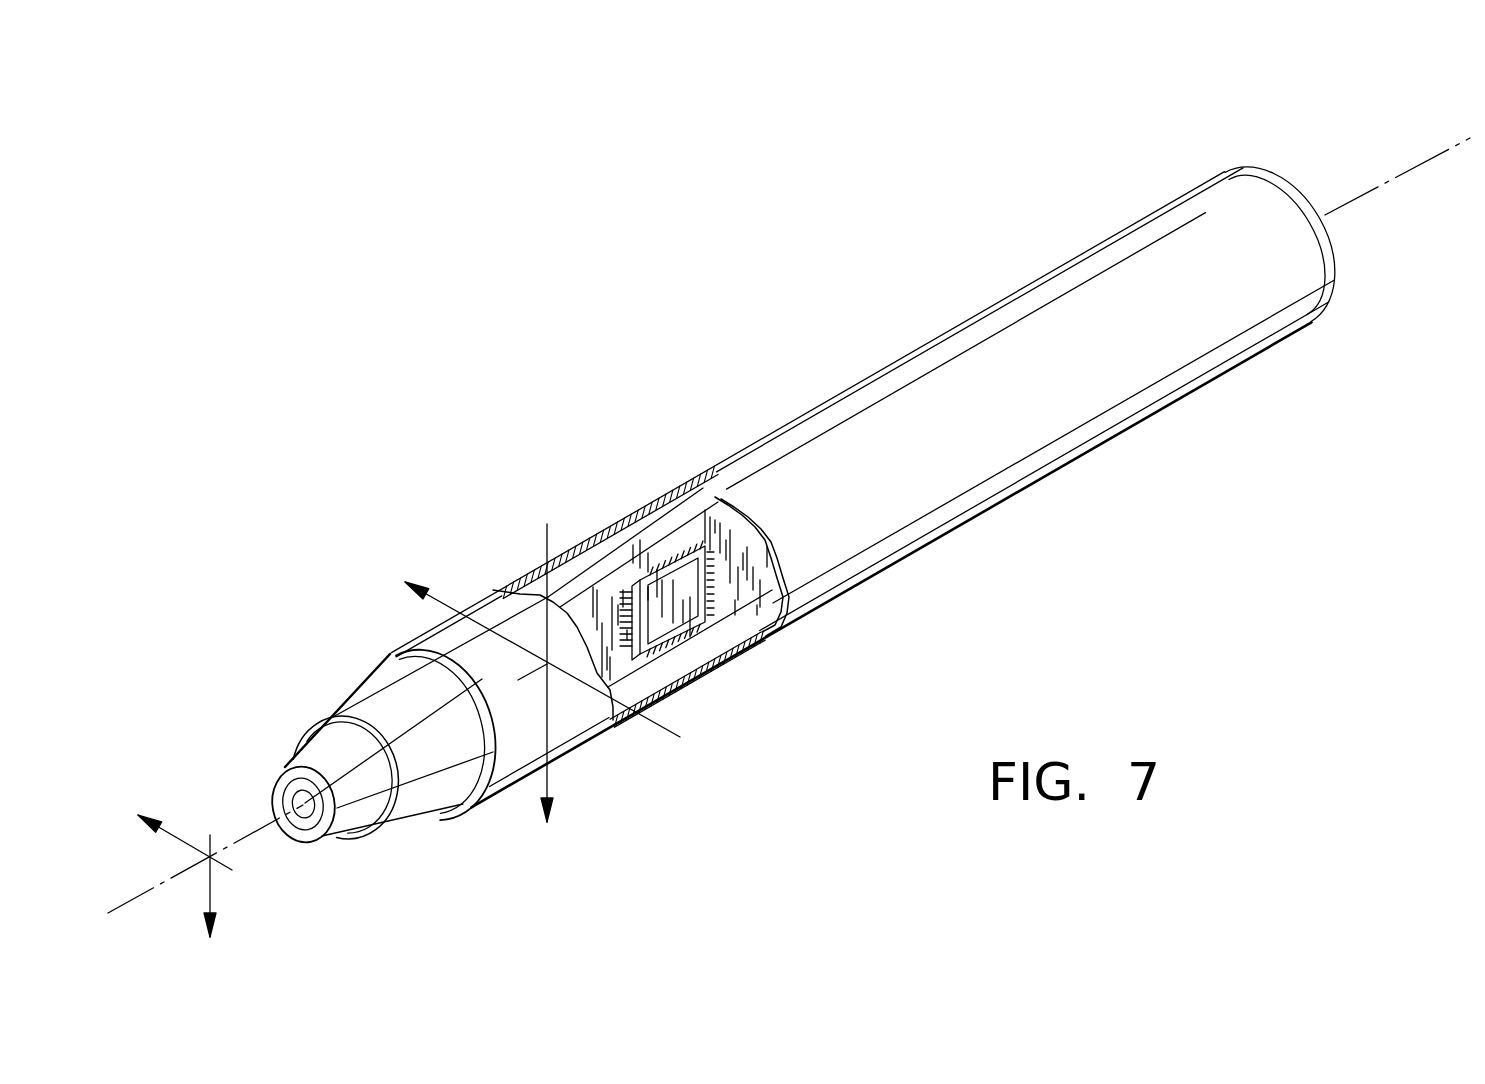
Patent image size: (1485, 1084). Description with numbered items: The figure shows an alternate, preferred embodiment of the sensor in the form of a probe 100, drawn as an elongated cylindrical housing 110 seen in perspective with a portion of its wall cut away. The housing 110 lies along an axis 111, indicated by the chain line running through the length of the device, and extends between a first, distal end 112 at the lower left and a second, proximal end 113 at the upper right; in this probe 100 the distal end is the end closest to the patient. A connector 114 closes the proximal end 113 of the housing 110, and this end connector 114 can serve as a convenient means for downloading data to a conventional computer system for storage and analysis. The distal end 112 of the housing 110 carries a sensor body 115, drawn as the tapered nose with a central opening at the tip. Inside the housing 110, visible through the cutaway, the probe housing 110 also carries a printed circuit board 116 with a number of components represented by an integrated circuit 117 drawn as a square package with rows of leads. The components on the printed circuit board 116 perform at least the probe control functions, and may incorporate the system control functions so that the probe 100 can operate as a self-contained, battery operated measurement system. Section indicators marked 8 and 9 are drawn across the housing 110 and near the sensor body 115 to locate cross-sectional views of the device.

The probe 100 is at (790, 350).
The cylindrical housing 110 is at (993, 470).
The axis 111 is at (1387, 177).
The distal end 112 is at (365, 620).
The proximal end 113 is at (1172, 172).
The connector 114 is at (1257, 175).
The sensor body 115 is at (334, 702).
The printed circuit board 116 is at (588, 608).
The integrated circuit 117 is at (678, 613).
The section line 8- 8 is at (455, 759).
The section line 9- 9 is at (348, 677).